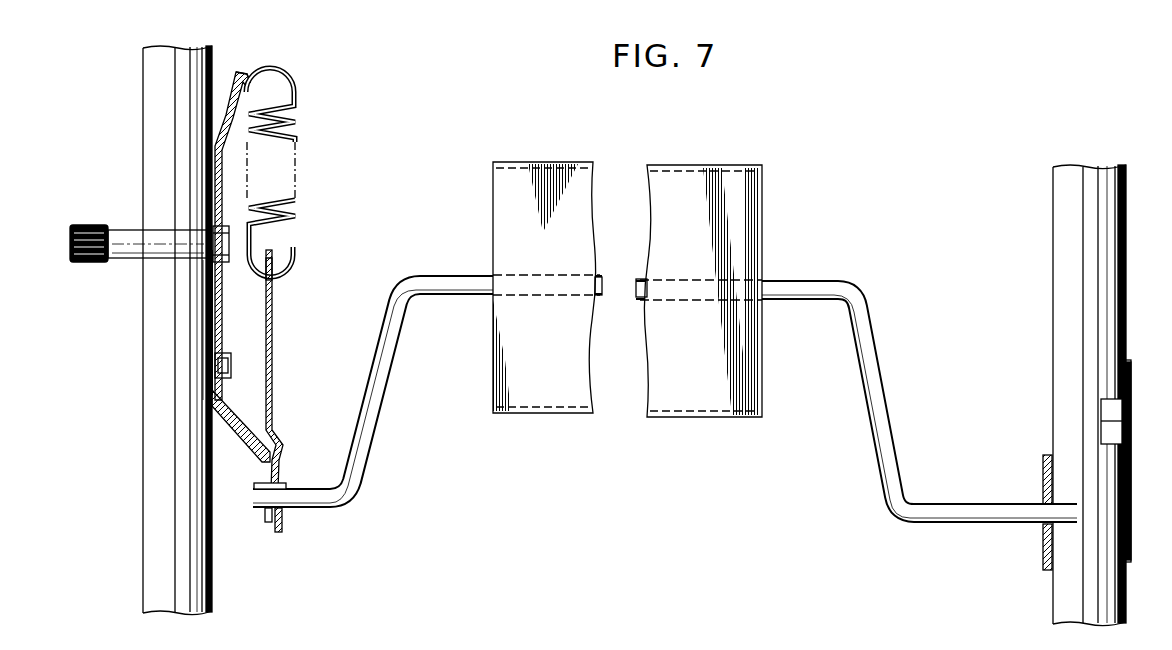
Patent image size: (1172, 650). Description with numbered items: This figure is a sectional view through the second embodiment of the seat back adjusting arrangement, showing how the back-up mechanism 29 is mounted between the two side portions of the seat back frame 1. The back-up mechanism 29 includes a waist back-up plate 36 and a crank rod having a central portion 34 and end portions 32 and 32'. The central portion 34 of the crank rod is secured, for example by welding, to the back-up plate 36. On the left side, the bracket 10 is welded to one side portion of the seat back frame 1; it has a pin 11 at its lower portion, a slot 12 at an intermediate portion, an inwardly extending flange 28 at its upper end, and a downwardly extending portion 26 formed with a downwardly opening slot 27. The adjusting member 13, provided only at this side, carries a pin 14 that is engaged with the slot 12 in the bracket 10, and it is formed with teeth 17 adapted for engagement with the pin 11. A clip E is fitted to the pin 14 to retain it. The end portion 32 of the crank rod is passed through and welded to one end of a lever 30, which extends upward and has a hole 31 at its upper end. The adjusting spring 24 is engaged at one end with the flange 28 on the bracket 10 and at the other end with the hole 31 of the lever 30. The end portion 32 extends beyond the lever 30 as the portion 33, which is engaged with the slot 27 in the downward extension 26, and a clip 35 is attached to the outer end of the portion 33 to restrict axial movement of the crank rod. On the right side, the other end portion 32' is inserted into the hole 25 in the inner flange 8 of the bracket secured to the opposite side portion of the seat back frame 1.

The seat back frame 1 is at (212, 588).
The inner flange 8 is at (1042, 480).
The bracket 10 is at (212, 325).
The pin 11 is at (232, 363).
The slot 12 is at (205, 200).
The adjusting member 13 is at (212, 303).
The pin 14 is at (135, 263).
The teeth 17 is at (1131, 496).
The adjusting spring 24 is at (297, 124).
The hole 25 is at (1048, 552).
The downwardly extending portion 26 is at (228, 432).
The slot 27 is at (279, 533).
The inwardly extending flange 28 is at (243, 73).
The back-up mechanism 29 is at (565, 157).
The lever 30 is at (275, 420).
The hole 31 is at (278, 270).
The end portion 32 is at (427, 422).
The end portion 32' is at (993, 542).
The extended portion 33 is at (256, 509).
The central portion 34 is at (800, 282).
The clip 35 is at (258, 484).
The waist back-up plate 36 is at (720, 185).
The clip E is at (205, 217).